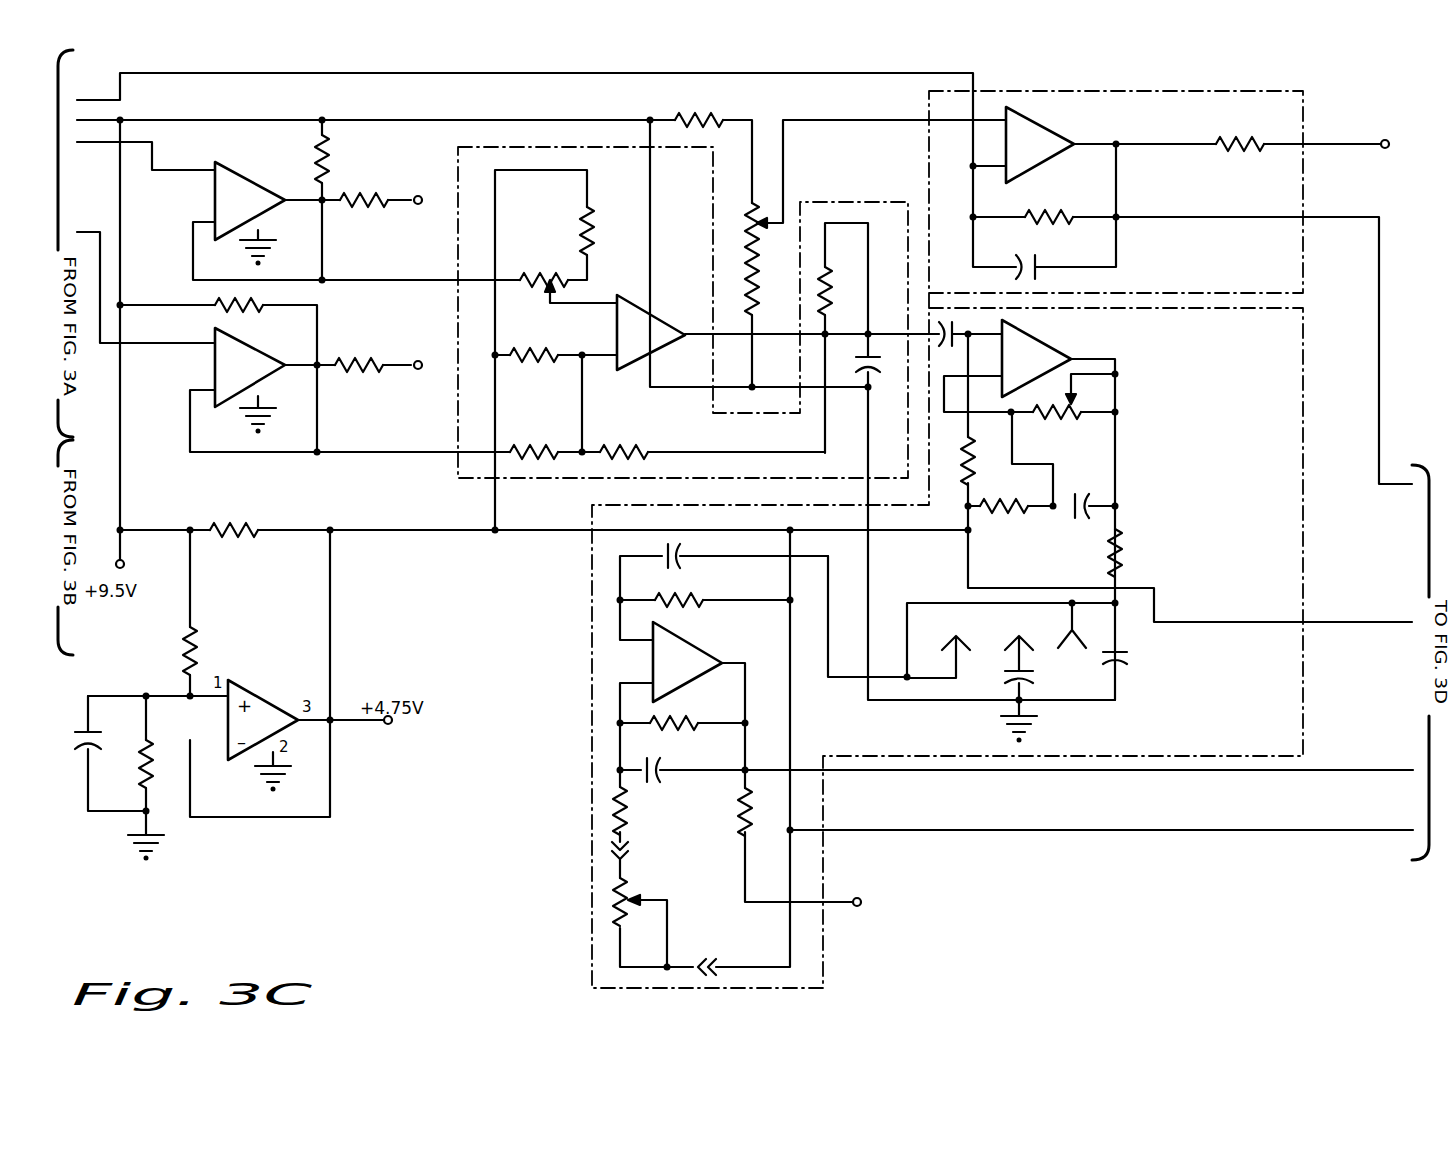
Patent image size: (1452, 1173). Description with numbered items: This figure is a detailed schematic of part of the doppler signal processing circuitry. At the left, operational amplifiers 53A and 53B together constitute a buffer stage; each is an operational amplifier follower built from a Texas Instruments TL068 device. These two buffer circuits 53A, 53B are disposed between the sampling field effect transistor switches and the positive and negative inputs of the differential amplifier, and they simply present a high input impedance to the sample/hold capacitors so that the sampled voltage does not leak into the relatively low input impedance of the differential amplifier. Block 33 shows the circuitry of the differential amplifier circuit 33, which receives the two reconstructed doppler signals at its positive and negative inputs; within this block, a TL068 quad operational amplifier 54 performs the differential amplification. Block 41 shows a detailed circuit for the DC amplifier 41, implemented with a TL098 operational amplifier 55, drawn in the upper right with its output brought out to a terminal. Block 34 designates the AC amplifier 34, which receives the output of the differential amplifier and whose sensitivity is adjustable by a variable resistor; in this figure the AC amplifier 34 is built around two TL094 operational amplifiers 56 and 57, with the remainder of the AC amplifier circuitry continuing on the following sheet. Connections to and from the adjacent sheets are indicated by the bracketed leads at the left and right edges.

The operational amplifier 53A is at (262, 180).
The operational amplifier 53B is at (244, 338).
The differential amplifier circuit 33 is at (459, 147).
The quad operational amplifier 54 is at (644, 363).
The DC amplifier 41 is at (1279, 256).
The operational amplifier 55 is at (1028, 174).
The AC amplifier 34 is at (1287, 330).
The operational amplifier 56 is at (1044, 340).
The operational amplifier 57 is at (697, 643).